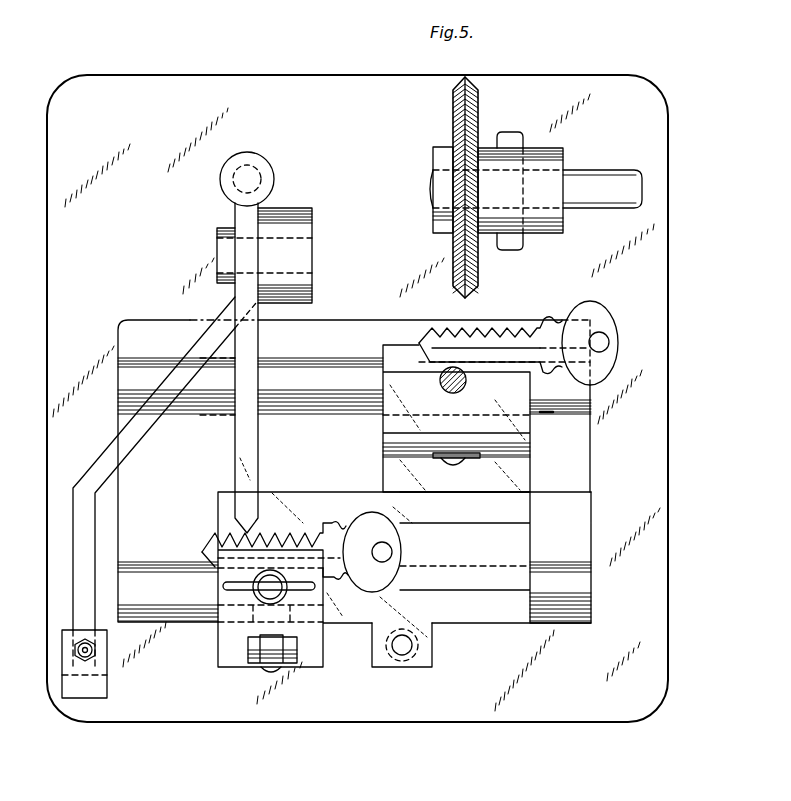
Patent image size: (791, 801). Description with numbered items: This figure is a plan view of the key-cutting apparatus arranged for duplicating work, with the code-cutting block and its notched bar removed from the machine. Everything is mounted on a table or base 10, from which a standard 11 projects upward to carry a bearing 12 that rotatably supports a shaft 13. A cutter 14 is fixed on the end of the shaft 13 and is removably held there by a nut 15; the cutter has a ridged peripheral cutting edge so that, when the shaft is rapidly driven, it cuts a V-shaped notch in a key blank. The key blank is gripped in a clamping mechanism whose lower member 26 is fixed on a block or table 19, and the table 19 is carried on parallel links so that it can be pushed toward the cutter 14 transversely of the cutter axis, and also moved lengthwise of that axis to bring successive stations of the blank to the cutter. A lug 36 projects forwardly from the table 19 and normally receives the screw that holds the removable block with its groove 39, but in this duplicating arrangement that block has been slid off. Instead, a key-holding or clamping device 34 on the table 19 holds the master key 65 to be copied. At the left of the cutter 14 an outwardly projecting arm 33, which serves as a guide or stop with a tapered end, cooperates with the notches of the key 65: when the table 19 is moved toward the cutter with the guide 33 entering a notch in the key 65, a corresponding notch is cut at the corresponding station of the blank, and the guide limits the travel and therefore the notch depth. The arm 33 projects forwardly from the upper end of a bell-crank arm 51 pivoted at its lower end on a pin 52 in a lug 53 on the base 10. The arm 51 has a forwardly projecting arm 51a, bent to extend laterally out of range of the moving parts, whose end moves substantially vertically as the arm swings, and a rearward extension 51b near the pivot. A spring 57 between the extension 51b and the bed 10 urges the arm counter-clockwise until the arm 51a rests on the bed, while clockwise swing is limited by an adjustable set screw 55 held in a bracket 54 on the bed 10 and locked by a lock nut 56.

The base 10 is at (523, 715).
The standard 11 is at (509, 135).
The bearing 12 is at (558, 148).
The shaft 13 is at (617, 175).
The cutter 14 is at (453, 113).
The nut 15 is at (440, 160).
The table 19 is at (517, 508).
The lower member 26 is at (554, 414).
The arm 33 is at (250, 397).
The key-holding or clamping device 34 is at (228, 635).
The lug 36 is at (422, 652).
The longitudinal recess or groove 39 is at (513, 555).
The arm 51 is at (250, 226).
The forwardly projecting arm 51a is at (92, 530).
The rearward extension 51b is at (265, 166).
The pin 52 is at (290, 242).
The lug 53 is at (303, 218).
The bracket 54 is at (102, 692).
The set screw 55 is at (92, 648).
The lock nut 56 is at (90, 660).
The spring 57 is at (249, 170).
The key 65 is at (392, 572).